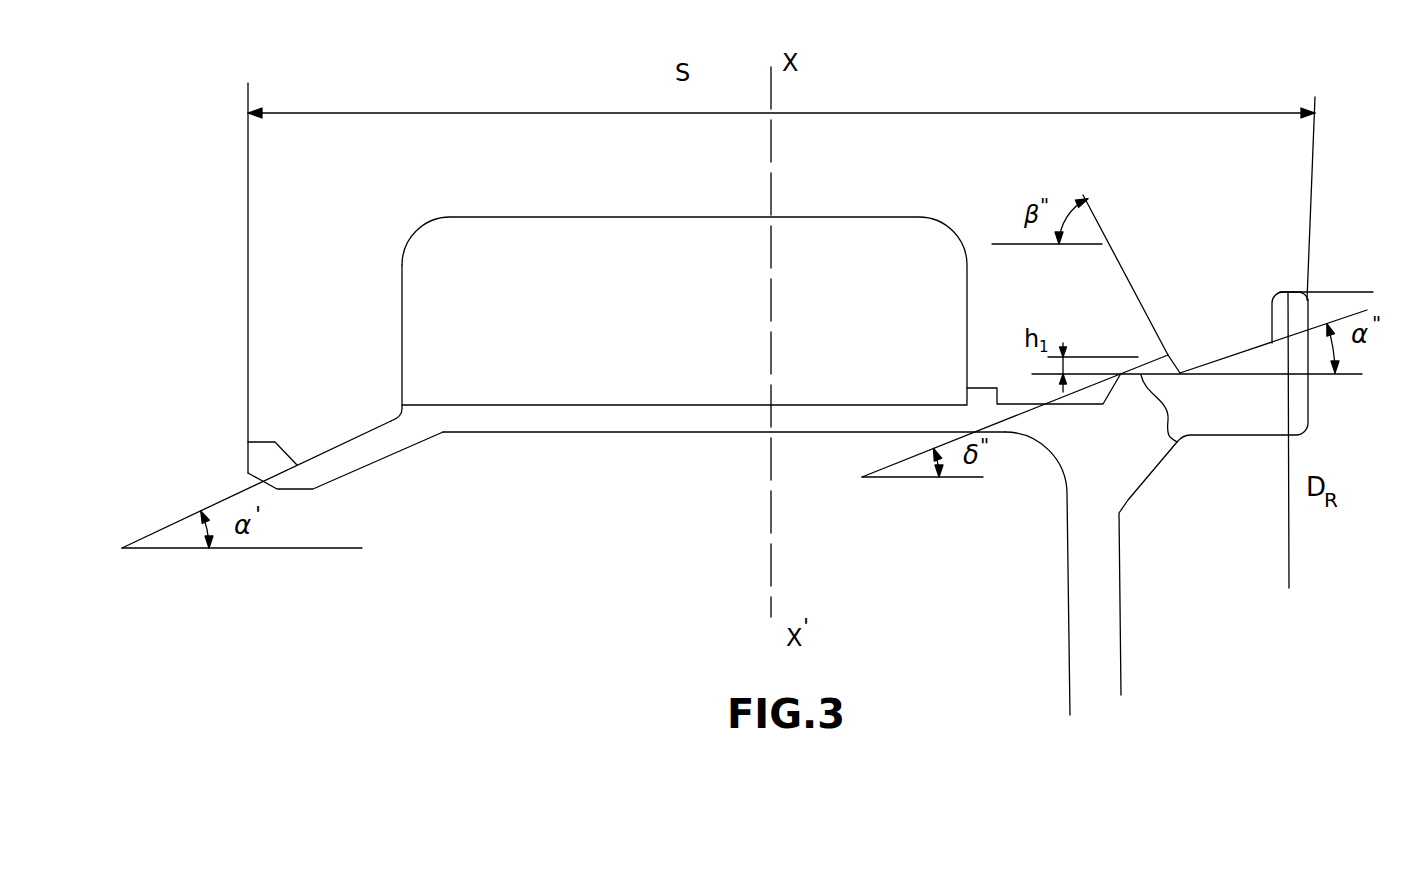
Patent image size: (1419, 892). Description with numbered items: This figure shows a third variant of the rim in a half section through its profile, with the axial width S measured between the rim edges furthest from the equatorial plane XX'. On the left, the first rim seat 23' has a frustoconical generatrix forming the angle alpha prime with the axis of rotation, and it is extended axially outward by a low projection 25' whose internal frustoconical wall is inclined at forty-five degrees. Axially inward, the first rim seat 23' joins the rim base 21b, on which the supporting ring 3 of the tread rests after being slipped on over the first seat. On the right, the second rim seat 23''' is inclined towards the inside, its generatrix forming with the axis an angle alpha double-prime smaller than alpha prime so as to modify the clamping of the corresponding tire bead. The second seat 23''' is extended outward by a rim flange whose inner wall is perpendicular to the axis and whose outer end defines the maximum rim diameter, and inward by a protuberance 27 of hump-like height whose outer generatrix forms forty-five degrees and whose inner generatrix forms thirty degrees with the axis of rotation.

The supporting ring 3 is at (668, 270).
The seat bottom surface of insert pocket 21b is at (620, 415).
The first rim seat 23' is at (256, 429).
The projection 25' is at (275, 432).
The second rim seat 23''' is at (1273, 277).
The protuberance 27 is at (1177, 442).